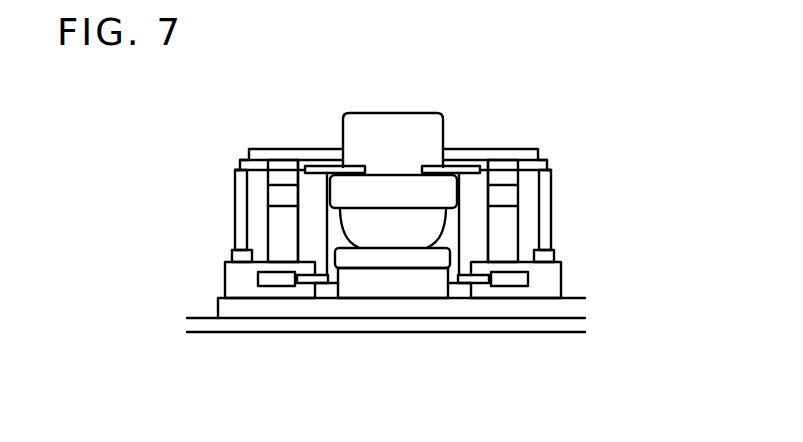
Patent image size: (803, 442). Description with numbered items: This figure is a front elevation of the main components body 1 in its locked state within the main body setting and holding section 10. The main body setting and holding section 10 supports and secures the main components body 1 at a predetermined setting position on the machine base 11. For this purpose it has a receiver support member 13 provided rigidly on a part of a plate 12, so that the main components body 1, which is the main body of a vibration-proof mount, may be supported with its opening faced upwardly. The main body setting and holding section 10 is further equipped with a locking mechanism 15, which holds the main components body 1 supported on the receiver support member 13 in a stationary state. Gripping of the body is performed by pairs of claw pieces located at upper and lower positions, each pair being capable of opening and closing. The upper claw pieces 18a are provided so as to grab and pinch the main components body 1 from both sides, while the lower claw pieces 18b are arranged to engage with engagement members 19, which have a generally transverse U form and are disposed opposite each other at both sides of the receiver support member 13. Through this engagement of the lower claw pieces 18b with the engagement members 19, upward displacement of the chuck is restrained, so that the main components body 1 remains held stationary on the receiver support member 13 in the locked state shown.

The main components body 1 is at (424, 128).
The main body setting and holding section 10 is at (370, 293).
The machine base 11 is at (203, 322).
The plate 12 is at (568, 307).
The receiver support member 13 is at (402, 285).
The locking mechanism 15 is at (515, 143).
The upper claw pieces 18a is at (353, 165).
The lower claw pieces 18b is at (320, 283).
The engagement members 19 is at (283, 266).